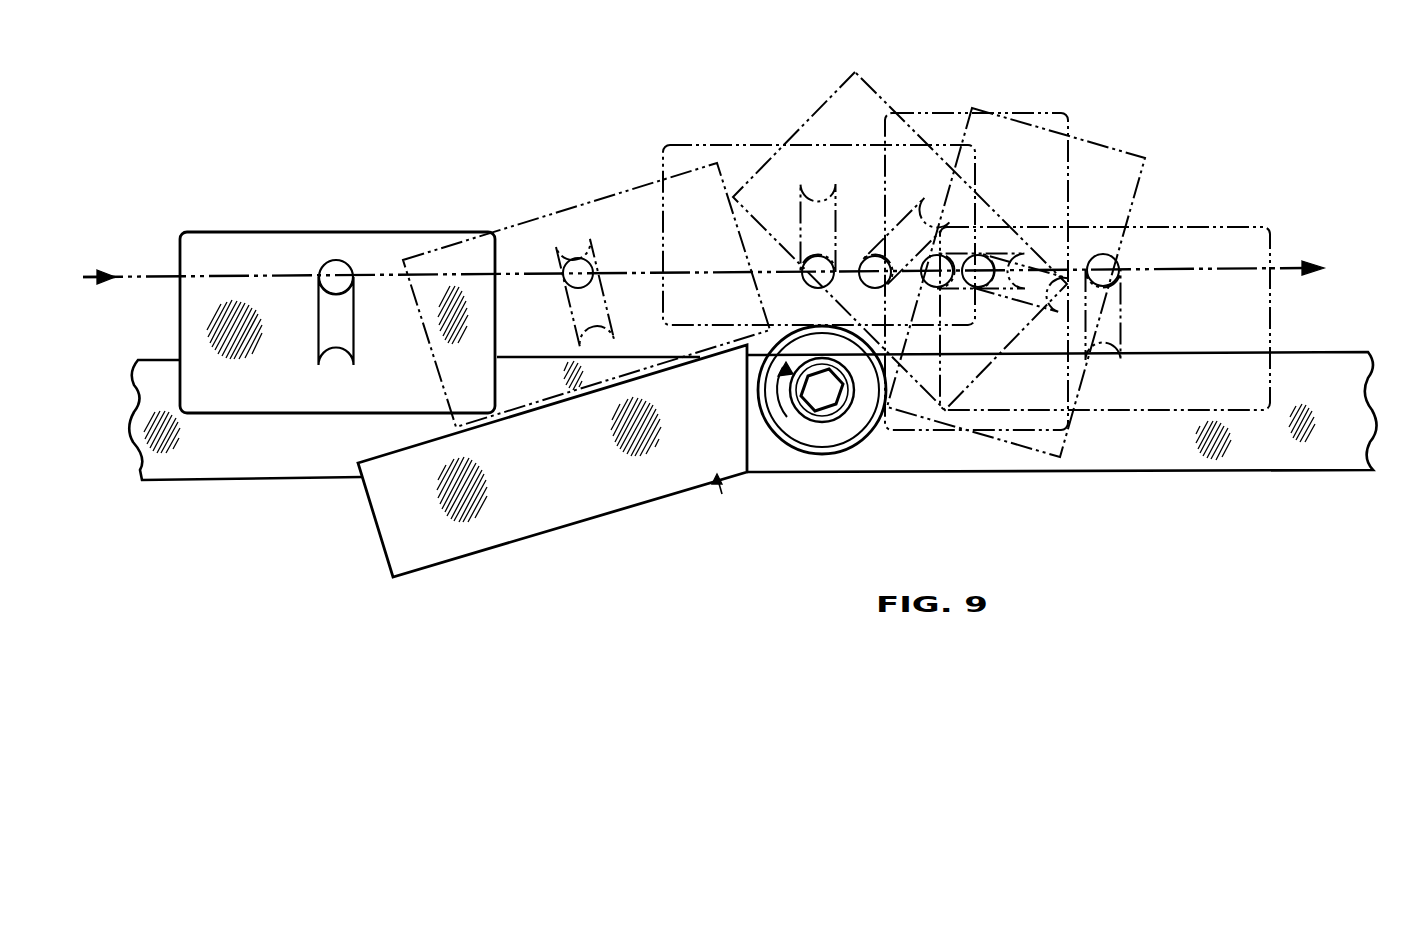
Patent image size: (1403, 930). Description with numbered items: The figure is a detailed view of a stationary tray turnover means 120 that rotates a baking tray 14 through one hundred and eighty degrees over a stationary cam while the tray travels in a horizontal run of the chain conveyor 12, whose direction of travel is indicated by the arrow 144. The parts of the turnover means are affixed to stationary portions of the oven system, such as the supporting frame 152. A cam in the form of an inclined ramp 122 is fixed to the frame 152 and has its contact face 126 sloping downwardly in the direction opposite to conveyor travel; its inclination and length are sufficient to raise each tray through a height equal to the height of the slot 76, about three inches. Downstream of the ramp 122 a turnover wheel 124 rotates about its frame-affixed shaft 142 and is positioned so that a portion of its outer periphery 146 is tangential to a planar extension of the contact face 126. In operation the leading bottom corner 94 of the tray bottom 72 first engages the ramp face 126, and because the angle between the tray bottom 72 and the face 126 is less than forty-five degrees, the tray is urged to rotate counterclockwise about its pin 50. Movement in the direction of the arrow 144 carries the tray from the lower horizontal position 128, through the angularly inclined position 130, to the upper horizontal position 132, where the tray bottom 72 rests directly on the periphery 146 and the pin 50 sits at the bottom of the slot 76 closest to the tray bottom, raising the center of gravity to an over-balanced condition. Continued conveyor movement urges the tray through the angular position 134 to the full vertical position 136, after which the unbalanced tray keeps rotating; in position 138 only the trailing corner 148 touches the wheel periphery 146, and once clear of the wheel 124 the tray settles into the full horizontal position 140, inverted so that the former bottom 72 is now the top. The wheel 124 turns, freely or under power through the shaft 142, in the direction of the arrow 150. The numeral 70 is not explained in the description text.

The chain conveyor 12 is at (136, 273).
The tray 14 is at (240, 232).
The pin 50 is at (346, 284).
The plate edge 70 is at (292, 232).
The tray bottom 72 is at (262, 414).
The slot 76 is at (354, 356).
The leading bottom corner 94 is at (498, 410).
The stationary tray turnover means 120 is at (727, 498).
The inclined ramp 122 is at (610, 494).
The turnover wheel 124 is at (833, 435).
The contact face 126 is at (378, 458).
The lower horizontal position 128 is at (430, 232).
The angularly inclined position 130 is at (610, 192).
The upper horizontal position 132 is at (727, 143).
The angular position 134 is at (880, 97).
The full vertical position 136 is at (955, 112).
The position 138 is at (1083, 135).
The full horizontal (lower) position 140 is at (1137, 226).
The wheel shaft 142 is at (815, 402).
The arrow 144 is at (97, 272).
The outer periphery 146 is at (792, 332).
The trailing corner 148 is at (881, 415).
The arrow 150 is at (778, 395).
The supporting frame 152 is at (284, 462).